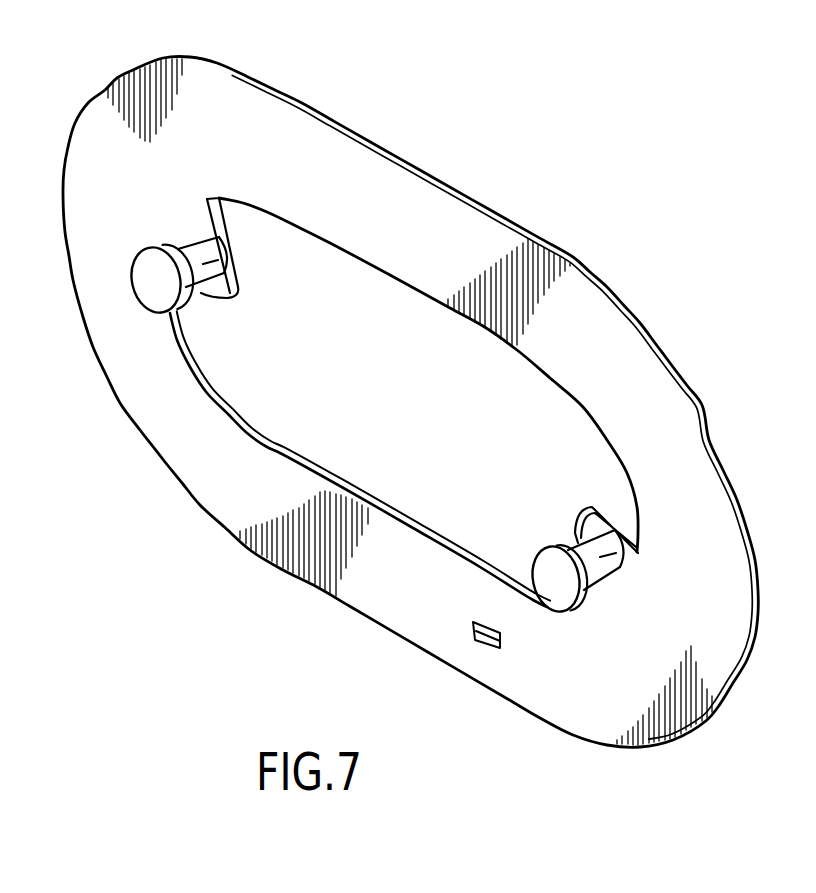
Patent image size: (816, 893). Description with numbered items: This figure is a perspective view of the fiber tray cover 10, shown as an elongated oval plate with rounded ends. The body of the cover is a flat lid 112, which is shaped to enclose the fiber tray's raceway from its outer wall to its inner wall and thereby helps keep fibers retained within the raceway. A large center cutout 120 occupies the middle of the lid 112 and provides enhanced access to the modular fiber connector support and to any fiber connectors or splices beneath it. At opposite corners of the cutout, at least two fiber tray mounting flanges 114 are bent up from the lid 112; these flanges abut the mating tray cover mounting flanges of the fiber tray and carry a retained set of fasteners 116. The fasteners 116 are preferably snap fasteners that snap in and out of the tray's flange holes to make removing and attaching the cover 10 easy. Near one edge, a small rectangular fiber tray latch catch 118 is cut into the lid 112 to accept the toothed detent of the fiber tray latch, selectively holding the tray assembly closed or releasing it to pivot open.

The fiber tray cover 10 is at (703, 401).
The flat lid 112 is at (569, 257).
The fiber tray mounting flange 114 is at (238, 283).
The fastener 116 is at (140, 268).
The fiber tray latch catch 118 is at (476, 639).
The center cutout 120 is at (226, 400).